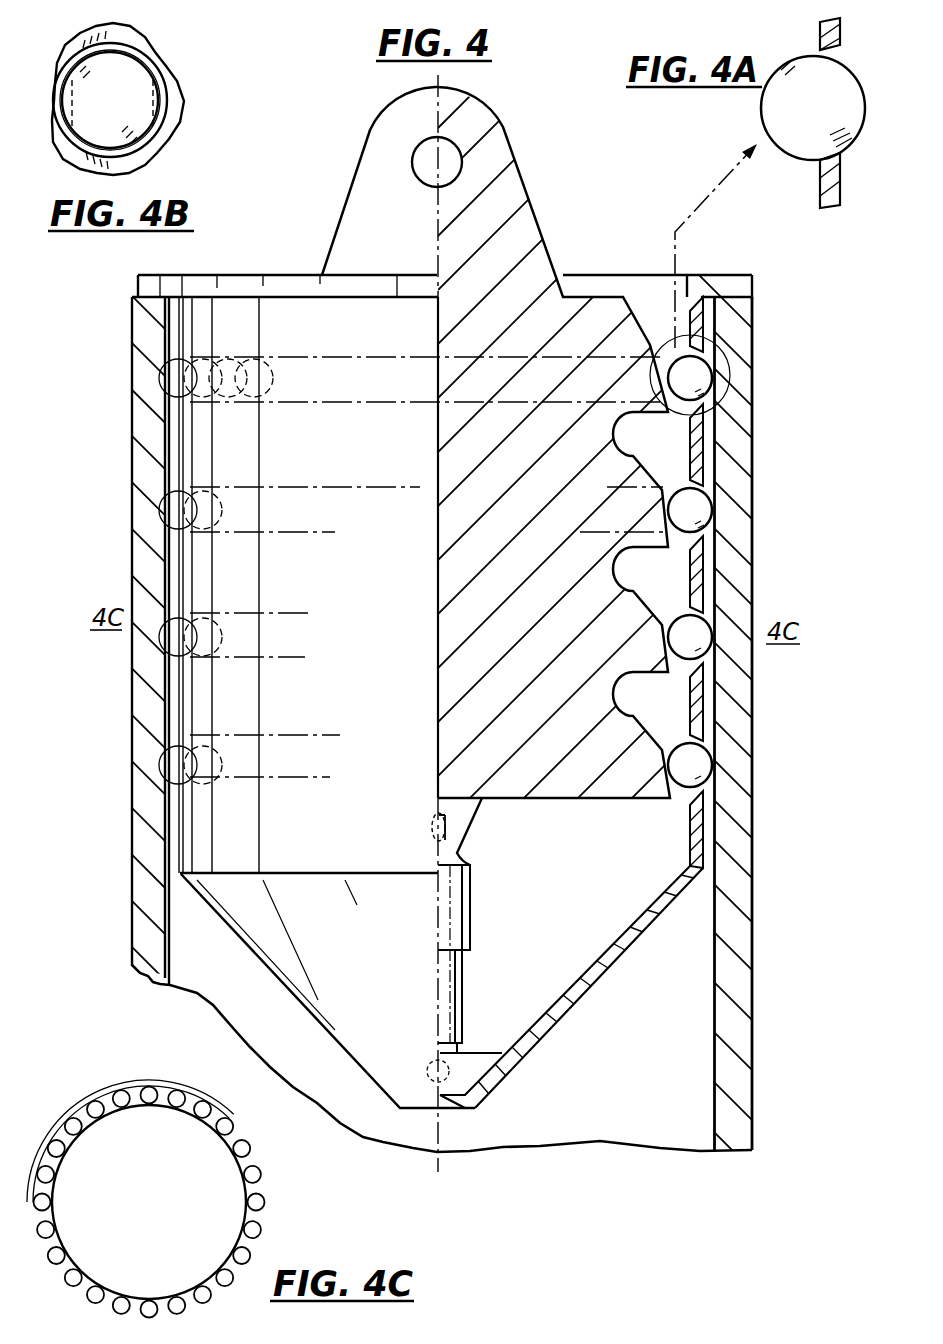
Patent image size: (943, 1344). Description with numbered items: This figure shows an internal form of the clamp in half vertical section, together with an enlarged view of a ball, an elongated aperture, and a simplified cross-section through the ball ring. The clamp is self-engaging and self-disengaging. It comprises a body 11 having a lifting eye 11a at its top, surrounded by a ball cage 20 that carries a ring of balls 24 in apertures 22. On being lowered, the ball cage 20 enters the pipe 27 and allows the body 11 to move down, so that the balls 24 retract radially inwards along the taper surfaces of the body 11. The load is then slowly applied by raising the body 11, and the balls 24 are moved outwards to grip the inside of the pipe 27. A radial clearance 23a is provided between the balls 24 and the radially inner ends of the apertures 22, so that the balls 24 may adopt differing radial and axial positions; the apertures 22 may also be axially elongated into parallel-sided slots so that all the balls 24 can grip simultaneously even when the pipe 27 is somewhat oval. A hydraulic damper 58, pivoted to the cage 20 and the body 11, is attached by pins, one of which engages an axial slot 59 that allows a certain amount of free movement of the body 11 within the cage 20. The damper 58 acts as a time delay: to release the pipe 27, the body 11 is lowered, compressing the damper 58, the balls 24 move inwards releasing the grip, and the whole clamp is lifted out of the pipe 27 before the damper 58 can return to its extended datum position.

In FIG. 4, the body 11 is at (592, 307).
In FIG. 4, the lifting eye 11a is at (447, 155).
In FIG. 4, the ball cage 20 is at (730, 290).
In FIG. 4B, the apertures 22 is at (133, 48).
In FIG. 4, the radial clearance 23a is at (571, 702).
In FIG. 4A, the radial clearance 23a is at (842, 157).
In FIG. 4, the balls 24 is at (702, 508).
In FIG. 4A, the balls 24 is at (802, 123).
In FIG. 4B, the balls 24 is at (128, 105).
In FIG. 4C, the balls 24 is at (50, 1226).
In FIG. 4, the pipe 27 is at (727, 827).
In FIG. 4, the hydraulic damper 58 is at (452, 925).
In FIG. 4, the axial slot 59 is at (447, 835).